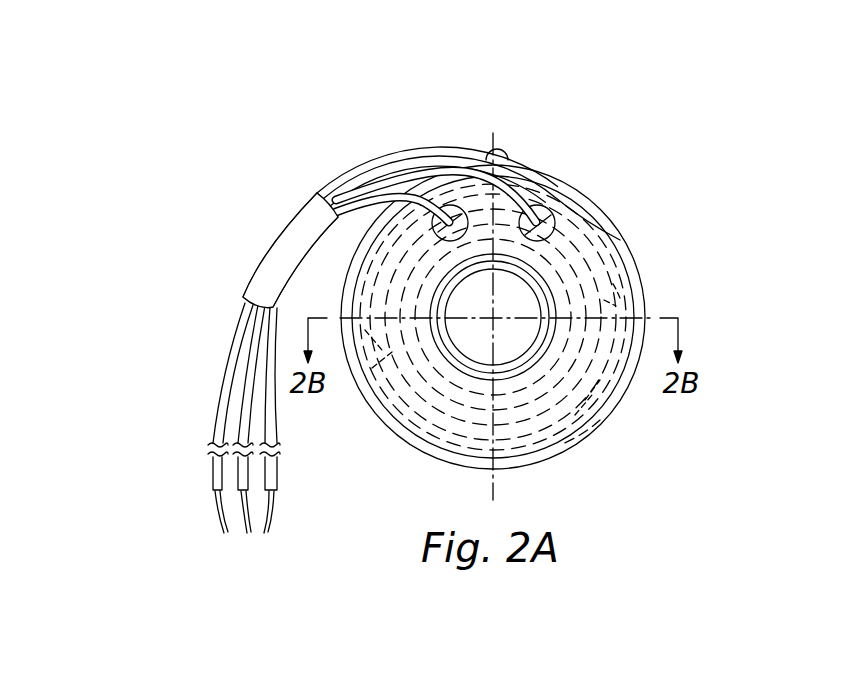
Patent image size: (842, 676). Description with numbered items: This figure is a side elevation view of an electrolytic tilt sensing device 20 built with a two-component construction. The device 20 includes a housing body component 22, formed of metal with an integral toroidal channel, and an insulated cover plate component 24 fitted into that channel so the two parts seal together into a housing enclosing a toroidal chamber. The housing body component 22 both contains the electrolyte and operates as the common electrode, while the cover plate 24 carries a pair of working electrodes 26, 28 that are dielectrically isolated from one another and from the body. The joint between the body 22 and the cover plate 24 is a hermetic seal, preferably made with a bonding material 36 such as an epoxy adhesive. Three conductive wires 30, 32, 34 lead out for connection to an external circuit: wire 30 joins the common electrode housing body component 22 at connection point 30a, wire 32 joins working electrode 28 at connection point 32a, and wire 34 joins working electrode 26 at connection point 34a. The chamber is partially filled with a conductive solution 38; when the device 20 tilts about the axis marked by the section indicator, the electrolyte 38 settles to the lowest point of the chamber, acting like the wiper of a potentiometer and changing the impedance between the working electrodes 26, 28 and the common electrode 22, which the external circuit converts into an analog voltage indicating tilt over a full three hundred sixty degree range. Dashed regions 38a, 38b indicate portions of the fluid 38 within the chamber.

The electrolytic tilt sensing device 20 is at (720, 236).
The housing body component 22 is at (596, 189).
The insulated cover plate component 24 is at (548, 424).
The working electrode 26 is at (408, 450).
The working electrode 28 is at (580, 256).
The conductive wire 30 is at (353, 166).
The connection point 30a is at (503, 152).
The conductive wire 32 is at (417, 162).
The connection point 32a is at (547, 198).
The conductive wire 34 is at (355, 212).
The connection point 34a is at (462, 203).
The bonding material 36 is at (352, 378).
The conductive solution 38 is at (610, 413).
The groove portion 38a is at (355, 376).
The groove portion 38b is at (620, 298).